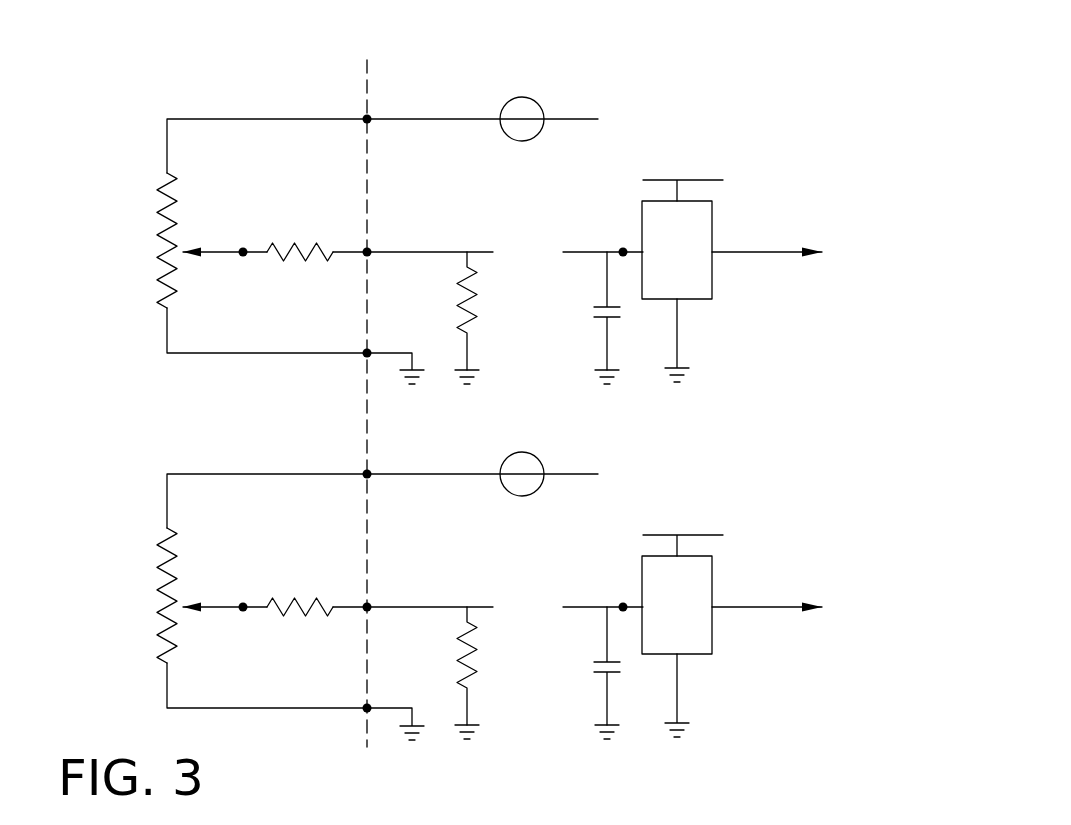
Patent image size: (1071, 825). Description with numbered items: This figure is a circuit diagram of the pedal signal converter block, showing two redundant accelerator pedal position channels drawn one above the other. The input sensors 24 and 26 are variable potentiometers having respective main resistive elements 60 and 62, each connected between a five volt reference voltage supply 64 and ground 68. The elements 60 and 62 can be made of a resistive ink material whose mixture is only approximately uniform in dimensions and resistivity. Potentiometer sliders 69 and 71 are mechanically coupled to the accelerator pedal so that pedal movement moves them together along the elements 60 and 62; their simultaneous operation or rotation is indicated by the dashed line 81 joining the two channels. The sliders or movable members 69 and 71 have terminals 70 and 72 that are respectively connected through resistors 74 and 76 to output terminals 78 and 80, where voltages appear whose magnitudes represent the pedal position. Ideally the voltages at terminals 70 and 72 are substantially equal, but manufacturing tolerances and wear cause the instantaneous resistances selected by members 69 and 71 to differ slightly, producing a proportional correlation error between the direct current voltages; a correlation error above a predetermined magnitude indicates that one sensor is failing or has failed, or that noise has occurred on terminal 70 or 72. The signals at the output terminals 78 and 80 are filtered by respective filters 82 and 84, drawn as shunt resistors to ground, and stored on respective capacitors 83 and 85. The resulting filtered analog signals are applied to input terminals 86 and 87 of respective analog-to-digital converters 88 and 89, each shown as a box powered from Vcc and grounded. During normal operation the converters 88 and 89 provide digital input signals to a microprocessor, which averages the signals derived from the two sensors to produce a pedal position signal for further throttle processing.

The input sensor 24 is at (143, 165).
The input sensor 26 is at (143, 520).
The main resistive element 60 is at (168, 226).
The main resistive element 62 is at (168, 581).
The reference voltage supply 64 is at (538, 102).
The ground 68 is at (418, 377).
The potentiometer slider 69 is at (191, 248).
The terminal 70 is at (243, 250).
The potentiometer slider 71 is at (191, 603).
The terminal 72 is at (243, 605).
The resistor 74 is at (303, 257).
The resistor 76 is at (303, 612).
The output terminal 78 is at (368, 250).
The output terminal 80 is at (368, 605).
The line 81 is at (365, 416).
The filter 82 is at (498, 318).
The capacitor 83 is at (590, 313).
The filter 84 is at (498, 673).
The capacitor 85 is at (590, 668).
The input terminal 86 is at (623, 248).
The input terminal 87 is at (623, 603).
The analog-to-digital converter 88 is at (713, 218).
The analog-to-digital converter 89 is at (713, 573).